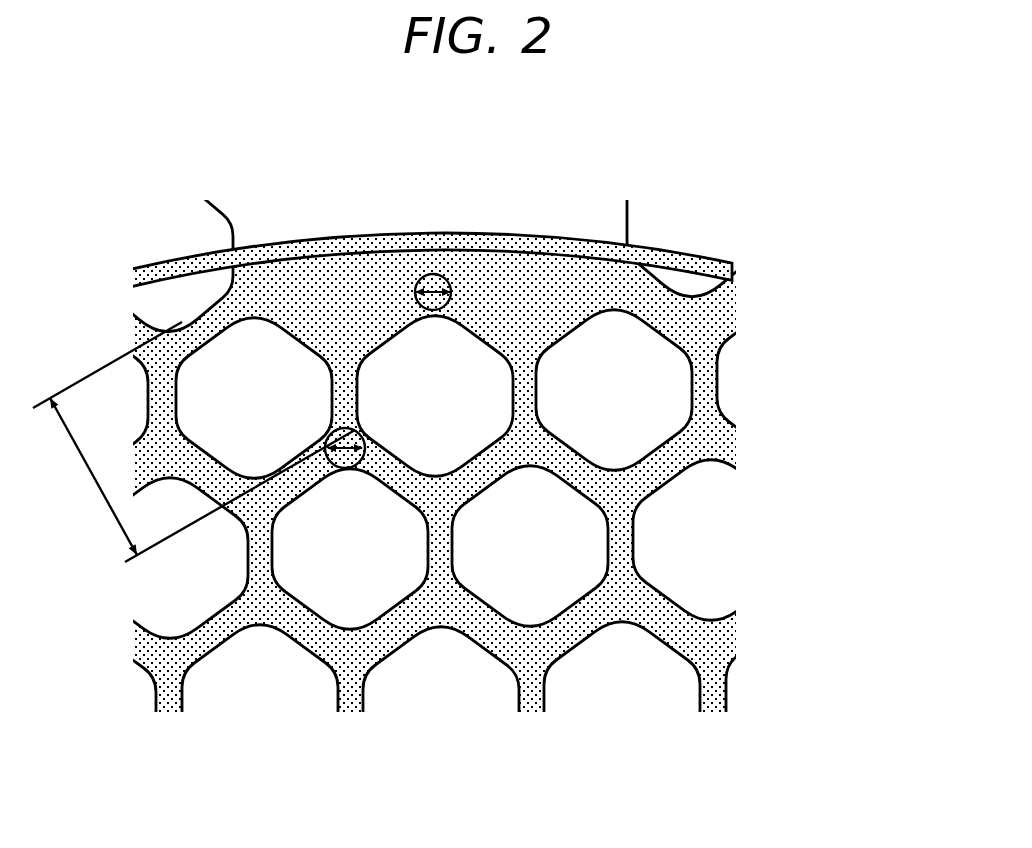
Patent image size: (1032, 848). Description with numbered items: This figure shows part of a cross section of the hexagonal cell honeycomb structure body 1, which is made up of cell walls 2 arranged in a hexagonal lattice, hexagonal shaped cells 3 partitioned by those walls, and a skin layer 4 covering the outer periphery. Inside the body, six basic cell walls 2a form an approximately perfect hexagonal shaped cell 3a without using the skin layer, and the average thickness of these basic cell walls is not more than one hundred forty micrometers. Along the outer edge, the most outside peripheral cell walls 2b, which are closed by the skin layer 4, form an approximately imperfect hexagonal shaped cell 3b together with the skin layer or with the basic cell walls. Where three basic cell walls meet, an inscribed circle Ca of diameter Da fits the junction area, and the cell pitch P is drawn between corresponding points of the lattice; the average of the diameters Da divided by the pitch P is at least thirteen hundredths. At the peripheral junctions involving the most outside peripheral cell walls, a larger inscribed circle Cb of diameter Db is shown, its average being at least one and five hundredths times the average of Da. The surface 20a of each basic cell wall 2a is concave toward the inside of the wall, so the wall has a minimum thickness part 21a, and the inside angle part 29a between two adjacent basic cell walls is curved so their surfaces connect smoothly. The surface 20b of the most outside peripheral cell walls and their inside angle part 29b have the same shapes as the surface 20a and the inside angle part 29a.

The hexagonal cell honeycomb structure body 1 is at (461, 450).
The cell wall 2 is at (667, 308).
The basic cell wall 2a is at (535, 367).
The most outside peripheral cell wall 2b is at (243, 287).
The hexagonal shaped cell 3 is at (441, 446).
The approximately perfect hexagonal shaped cell 3a is at (463, 318).
The approximately imperfect hexagonal shaped cell 3b is at (353, 275).
The skin layer 4 is at (383, 242).
The surface of basic cell wall 20a is at (510, 407).
The surface of most outside peripheral cell wall 20b is at (265, 275).
The minimum thickness part 21a is at (533, 403).
The inside angle part 29a is at (466, 447).
The inside angle part 29b is at (342, 322).
The inscribed circle Ca is at (366, 462).
The inscribed circle Cb is at (431, 273).
The diameter of inscribed circle Ca Da is at (347, 448).
The diameter of inscribed circle Cb Db is at (450, 347).
The cell pitch P is at (194, 442).